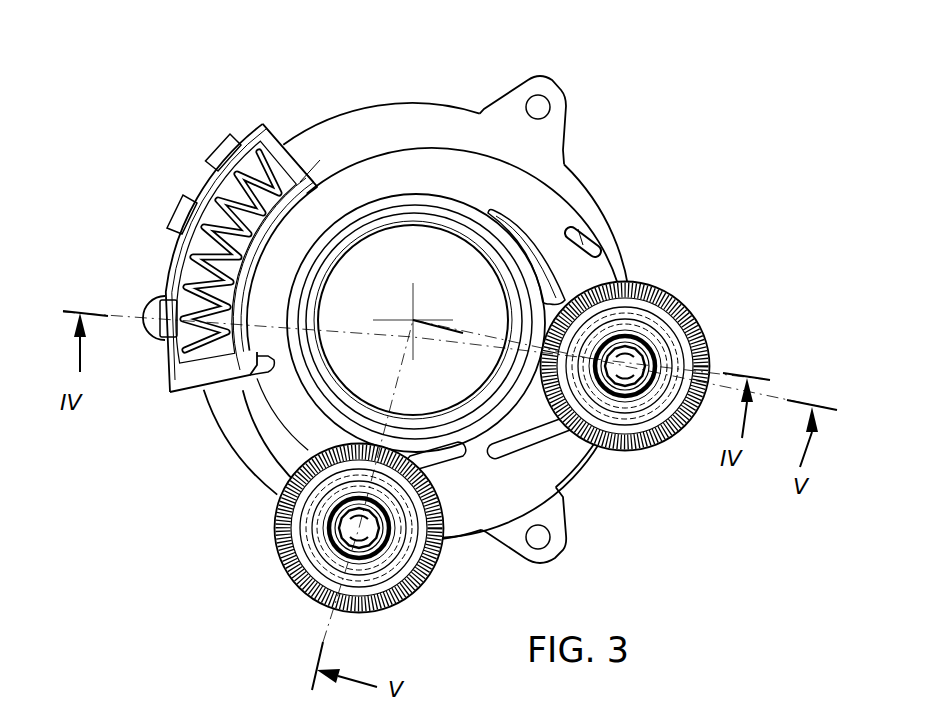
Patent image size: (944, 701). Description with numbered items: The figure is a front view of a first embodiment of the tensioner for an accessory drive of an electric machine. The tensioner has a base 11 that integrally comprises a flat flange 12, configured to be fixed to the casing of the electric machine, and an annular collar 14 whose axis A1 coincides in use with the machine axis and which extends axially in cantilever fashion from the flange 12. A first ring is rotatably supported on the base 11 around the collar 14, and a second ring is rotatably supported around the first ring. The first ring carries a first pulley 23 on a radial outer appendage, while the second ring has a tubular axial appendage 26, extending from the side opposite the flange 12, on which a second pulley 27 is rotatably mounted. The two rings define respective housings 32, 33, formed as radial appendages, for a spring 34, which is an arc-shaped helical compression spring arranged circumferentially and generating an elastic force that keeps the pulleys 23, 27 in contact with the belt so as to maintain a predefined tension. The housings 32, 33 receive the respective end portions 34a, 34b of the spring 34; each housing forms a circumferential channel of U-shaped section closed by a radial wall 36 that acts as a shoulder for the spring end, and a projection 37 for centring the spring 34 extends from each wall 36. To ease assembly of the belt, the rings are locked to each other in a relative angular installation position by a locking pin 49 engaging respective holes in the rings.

The base 11 is at (463, 98).
The flat flange 12 is at (568, 178).
The annular collar 14 is at (320, 322).
The axis A1 is at (420, 316).
The first pulley 23 is at (280, 557).
The second pulley 27 is at (673, 298).
The tubular axial appendage 26 is at (780, 693).
The housing 32 is at (160, 386).
The housing 33 is at (265, 110).
The spring 34 is at (200, 200).
The end portion of the spring 34a is at (167, 290).
The end portion of the spring 34b is at (218, 157).
The radial wall 36 is at (285, 140).
The projection 37 is at (280, 167).
The locking pin 49 is at (593, 212).